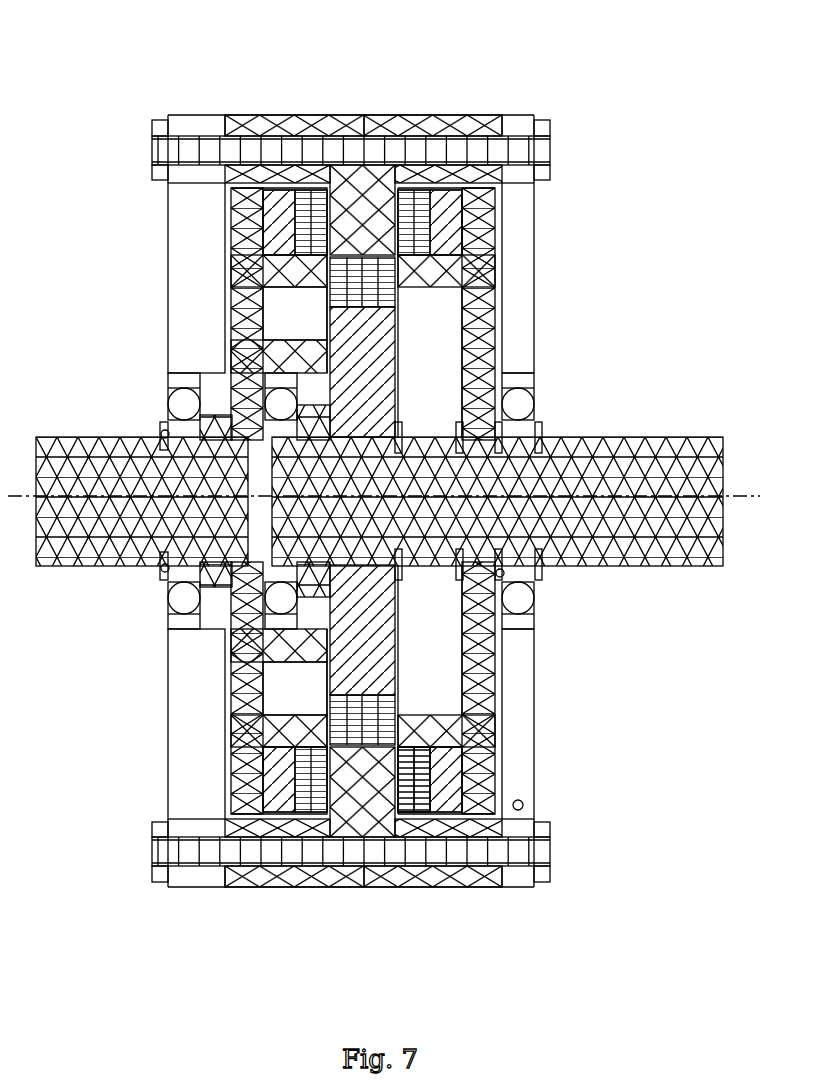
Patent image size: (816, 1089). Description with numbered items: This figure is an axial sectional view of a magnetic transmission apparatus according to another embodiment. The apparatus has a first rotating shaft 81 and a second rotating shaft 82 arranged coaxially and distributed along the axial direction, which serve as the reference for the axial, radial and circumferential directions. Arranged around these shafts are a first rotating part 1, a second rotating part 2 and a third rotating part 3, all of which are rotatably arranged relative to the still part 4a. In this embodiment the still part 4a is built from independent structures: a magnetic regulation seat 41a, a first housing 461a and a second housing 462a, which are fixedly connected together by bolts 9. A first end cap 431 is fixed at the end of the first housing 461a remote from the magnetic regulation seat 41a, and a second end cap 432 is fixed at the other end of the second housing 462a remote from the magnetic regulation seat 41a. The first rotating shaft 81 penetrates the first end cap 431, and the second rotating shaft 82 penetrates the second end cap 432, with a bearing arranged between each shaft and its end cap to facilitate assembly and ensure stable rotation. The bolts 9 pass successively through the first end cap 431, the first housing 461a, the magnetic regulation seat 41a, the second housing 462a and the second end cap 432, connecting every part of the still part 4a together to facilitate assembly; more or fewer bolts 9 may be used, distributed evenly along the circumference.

The first rotating part 1 is at (289, 801).
The second rotating part 2 is at (312, 704).
The third rotating part 3 is at (434, 815).
The still part 4a is at (349, 104).
The bolts 9 is at (207, 148).
The magnetic regulation seat 41a is at (367, 195).
The first end cap 431 is at (185, 263).
The second end cap 432 is at (520, 263).
The first housing 461a is at (275, 124).
The second housing 462a is at (442, 124).
The first rotating shaft 81 is at (115, 505).
The second rotating shaft 82 is at (590, 505).